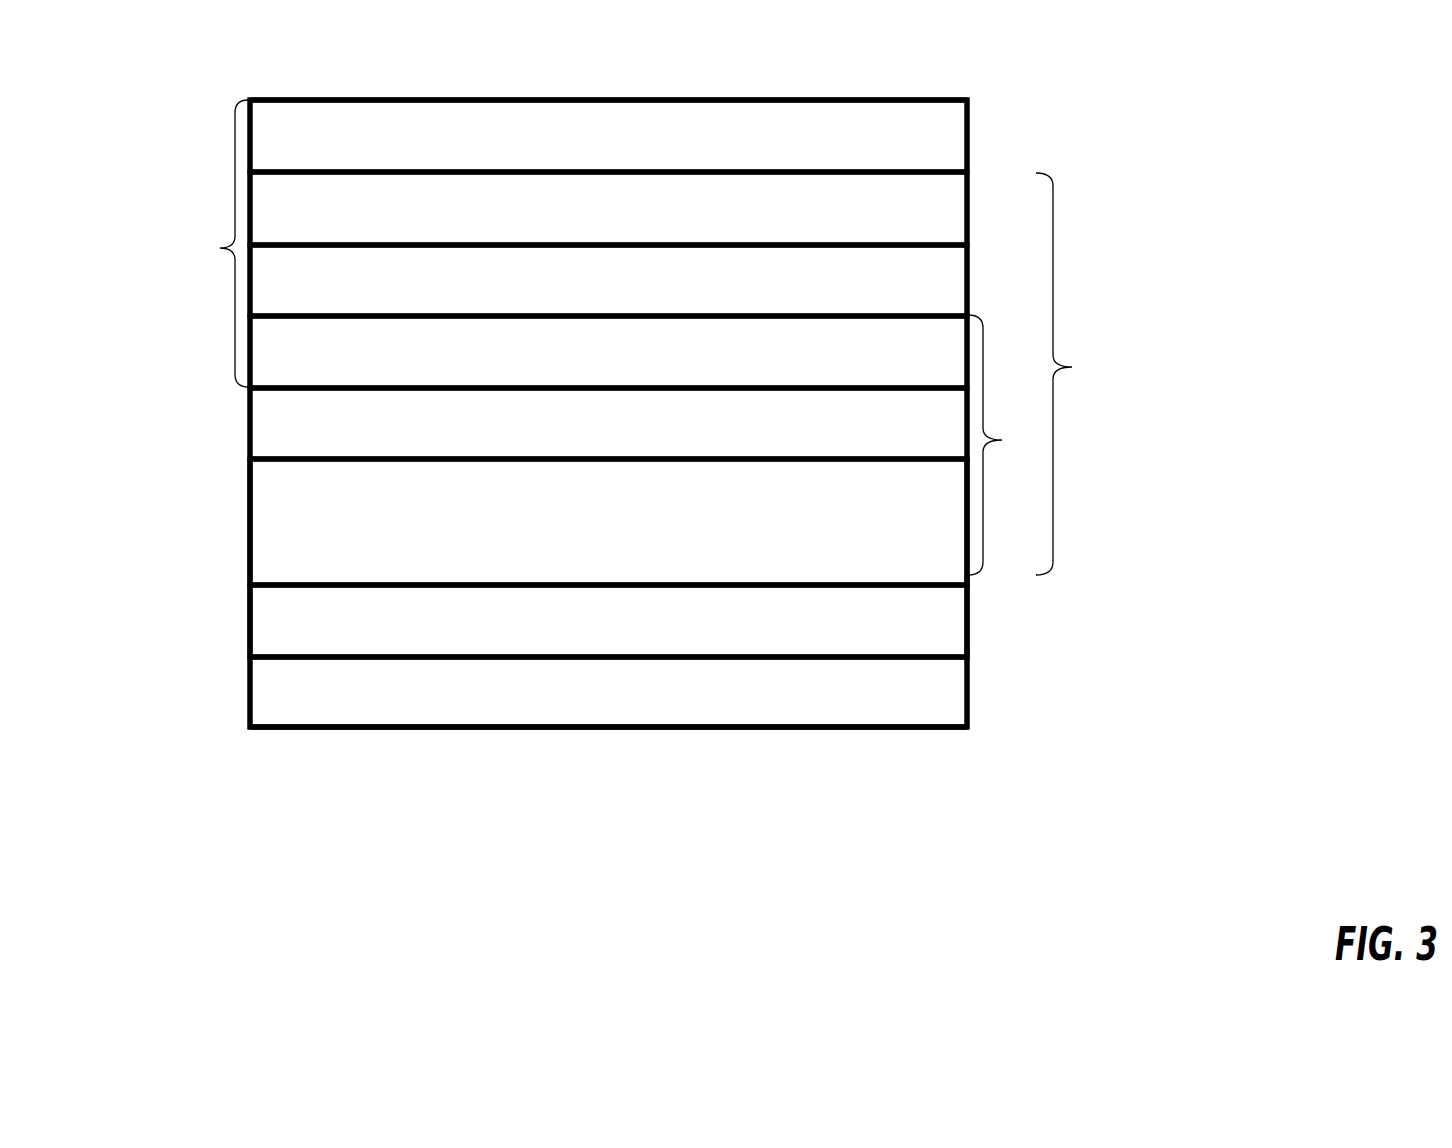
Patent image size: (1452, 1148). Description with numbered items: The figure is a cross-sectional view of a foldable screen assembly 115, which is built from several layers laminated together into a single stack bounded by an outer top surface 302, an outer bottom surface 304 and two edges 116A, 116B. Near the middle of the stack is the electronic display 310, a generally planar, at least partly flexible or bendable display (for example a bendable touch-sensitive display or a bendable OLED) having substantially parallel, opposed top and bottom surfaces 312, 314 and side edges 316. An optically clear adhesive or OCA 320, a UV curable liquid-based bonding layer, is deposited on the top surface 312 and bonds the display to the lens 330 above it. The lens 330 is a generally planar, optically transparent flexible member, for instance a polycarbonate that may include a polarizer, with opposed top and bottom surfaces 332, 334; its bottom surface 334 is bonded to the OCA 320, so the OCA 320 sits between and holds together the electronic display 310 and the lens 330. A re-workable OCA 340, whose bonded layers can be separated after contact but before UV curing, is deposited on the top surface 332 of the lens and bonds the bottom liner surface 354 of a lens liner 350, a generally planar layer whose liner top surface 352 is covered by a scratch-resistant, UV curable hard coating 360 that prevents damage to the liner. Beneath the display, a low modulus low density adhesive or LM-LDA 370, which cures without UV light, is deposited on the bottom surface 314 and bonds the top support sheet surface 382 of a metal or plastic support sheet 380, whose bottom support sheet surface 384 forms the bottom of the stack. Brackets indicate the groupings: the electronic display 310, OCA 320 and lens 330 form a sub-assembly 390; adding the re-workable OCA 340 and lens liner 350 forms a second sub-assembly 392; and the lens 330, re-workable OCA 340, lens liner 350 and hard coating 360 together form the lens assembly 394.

The foldable screen assembly 115 is at (740, 384).
The edge 116A is at (238, 616).
The edge 116B is at (979, 624).
The outer top surface 302 is at (860, 98).
The outer bottom surface 304 is at (913, 730).
The electronic display 310 is at (705, 534).
The top surface 312 is at (845, 461).
The bottom surface 314 is at (850, 584).
The side edges of electronic display 316 is at (248, 513).
The optically clear adhesive (OCA) layer 320 is at (648, 436).
The lens 330 is at (648, 364).
The top surface 332 is at (820, 318).
The bottom surface 334 is at (906, 386).
The re-workable OCA 340 is at (703, 291).
The lens liner 350 is at (670, 221).
The liner top surface 352 is at (818, 174).
The bottom liner surface 354 is at (903, 243).
The hard coating 360 is at (670, 149).
The low modulus low density adhesive (LM-LDA) 370 is at (662, 632).
The support sheet 380 is at (690, 704).
The top support sheet surface 382 is at (808, 659).
The bottom support sheet surface 384 is at (810, 726).
The sub-assembly 390 is at (1004, 445).
The second sub-assembly 392 is at (1073, 374).
The lens assembly 394 is at (211, 243).